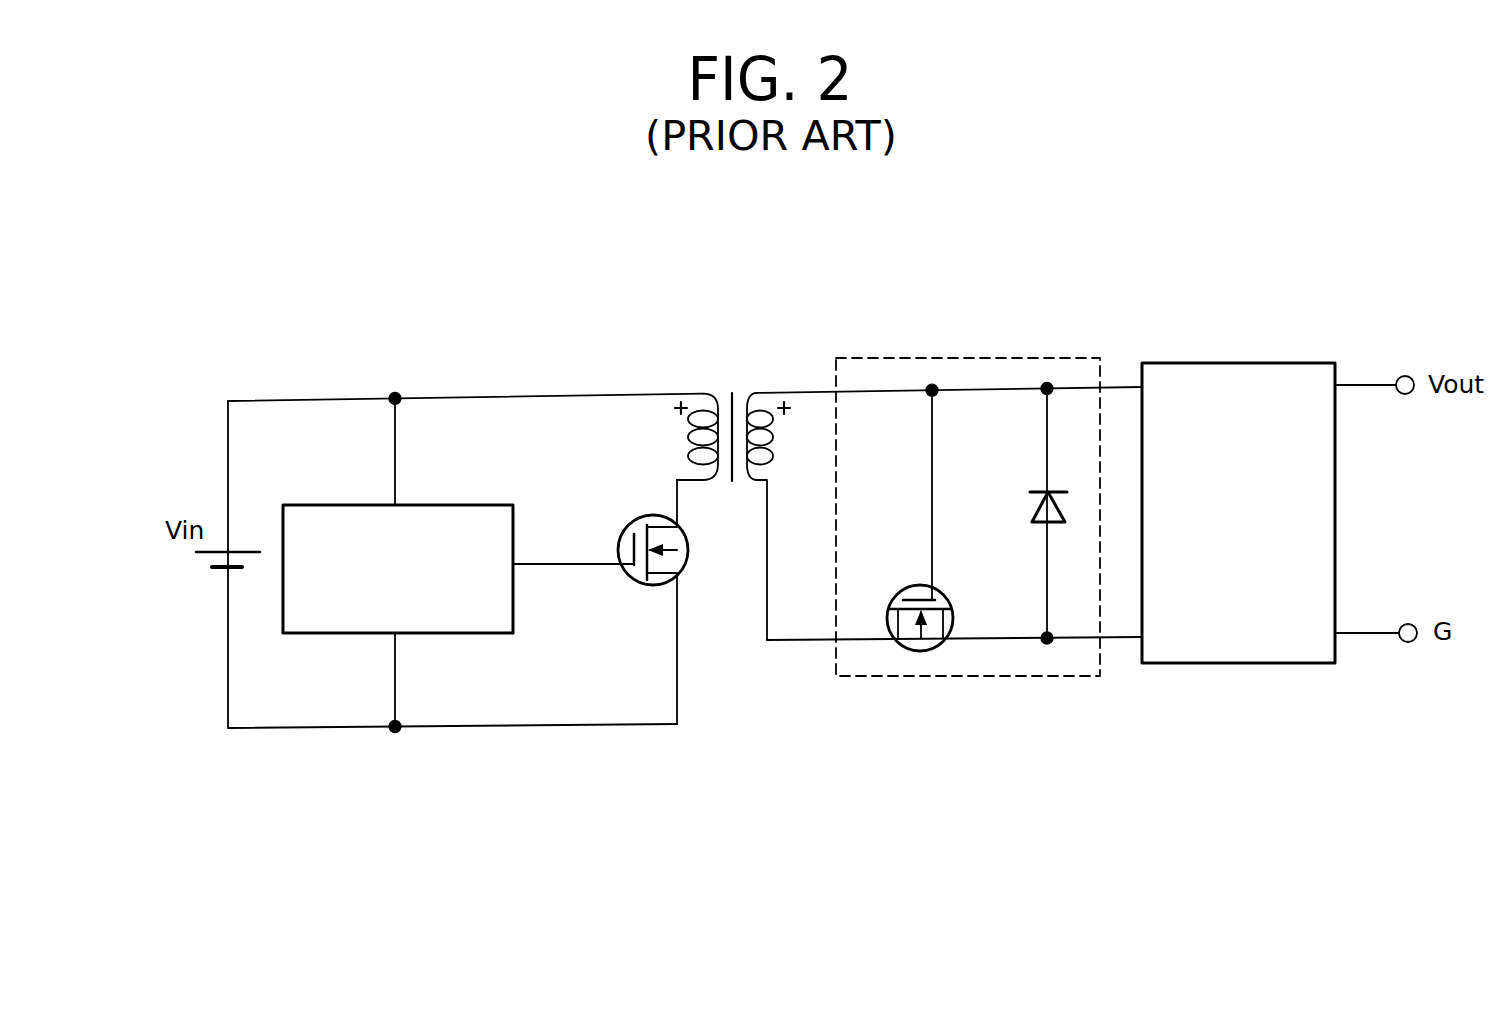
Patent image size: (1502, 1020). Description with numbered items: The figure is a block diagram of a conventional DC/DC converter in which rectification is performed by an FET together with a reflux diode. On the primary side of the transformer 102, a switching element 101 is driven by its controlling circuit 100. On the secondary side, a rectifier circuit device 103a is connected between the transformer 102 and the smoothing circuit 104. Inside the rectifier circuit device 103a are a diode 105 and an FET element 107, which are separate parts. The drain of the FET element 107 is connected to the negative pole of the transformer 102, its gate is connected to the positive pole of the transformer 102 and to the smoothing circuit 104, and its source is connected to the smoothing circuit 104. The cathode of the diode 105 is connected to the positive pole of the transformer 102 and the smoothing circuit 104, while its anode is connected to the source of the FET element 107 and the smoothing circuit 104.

The controlling circuit 100 is at (345, 505).
The switching element 101 is at (638, 518).
The transformer 102 is at (732, 385).
The rectifier circuit device 103a is at (986, 358).
The smoothing circuit 104 is at (1257, 363).
The diode 105 is at (1040, 526).
The FET element 107 is at (921, 651).